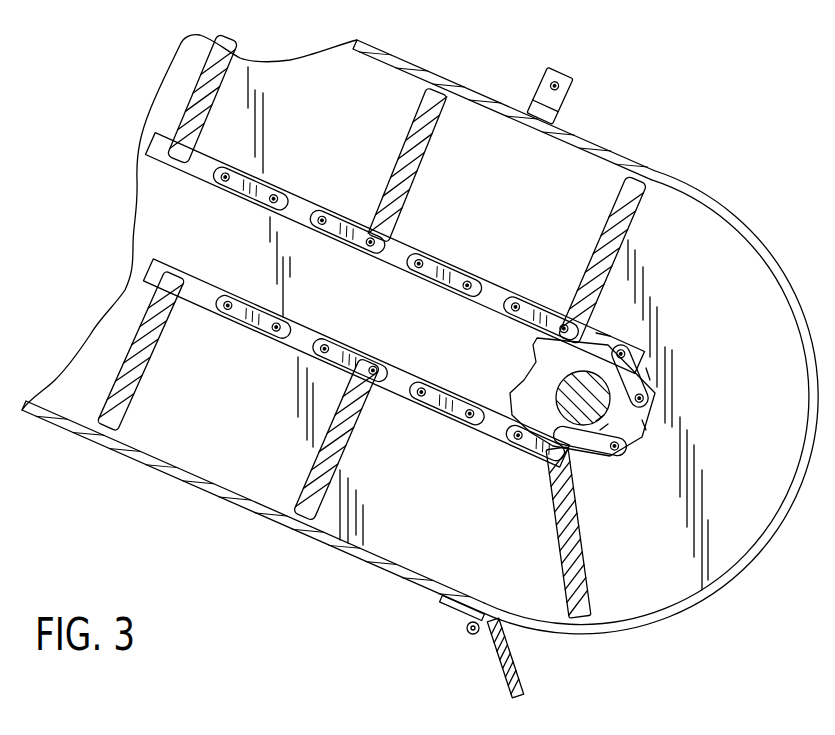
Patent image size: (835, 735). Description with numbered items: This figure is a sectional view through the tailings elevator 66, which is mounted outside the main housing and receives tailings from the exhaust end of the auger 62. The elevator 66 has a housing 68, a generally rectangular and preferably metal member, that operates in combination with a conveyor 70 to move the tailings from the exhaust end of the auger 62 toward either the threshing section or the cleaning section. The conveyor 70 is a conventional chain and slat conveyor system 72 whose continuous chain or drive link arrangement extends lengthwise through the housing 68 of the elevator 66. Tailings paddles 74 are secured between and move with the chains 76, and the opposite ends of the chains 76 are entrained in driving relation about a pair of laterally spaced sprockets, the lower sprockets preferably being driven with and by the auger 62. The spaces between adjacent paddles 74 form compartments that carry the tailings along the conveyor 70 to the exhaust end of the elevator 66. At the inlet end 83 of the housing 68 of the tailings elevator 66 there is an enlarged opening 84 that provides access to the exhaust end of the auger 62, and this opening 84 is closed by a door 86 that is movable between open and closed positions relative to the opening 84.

The auger 62 is at (555, 418).
The tailings elevator 66 is at (183, 533).
The housing 68 is at (423, 53).
The conveyor 70 is at (470, 260).
The chain and slat conveyor system 72 is at (365, 341).
The tailings paddles 74 is at (427, 146).
The chains 76 is at (453, 398).
The inlet end 83 is at (641, 578).
The enlarged opening 84 is at (737, 575).
The door 86 is at (493, 663).